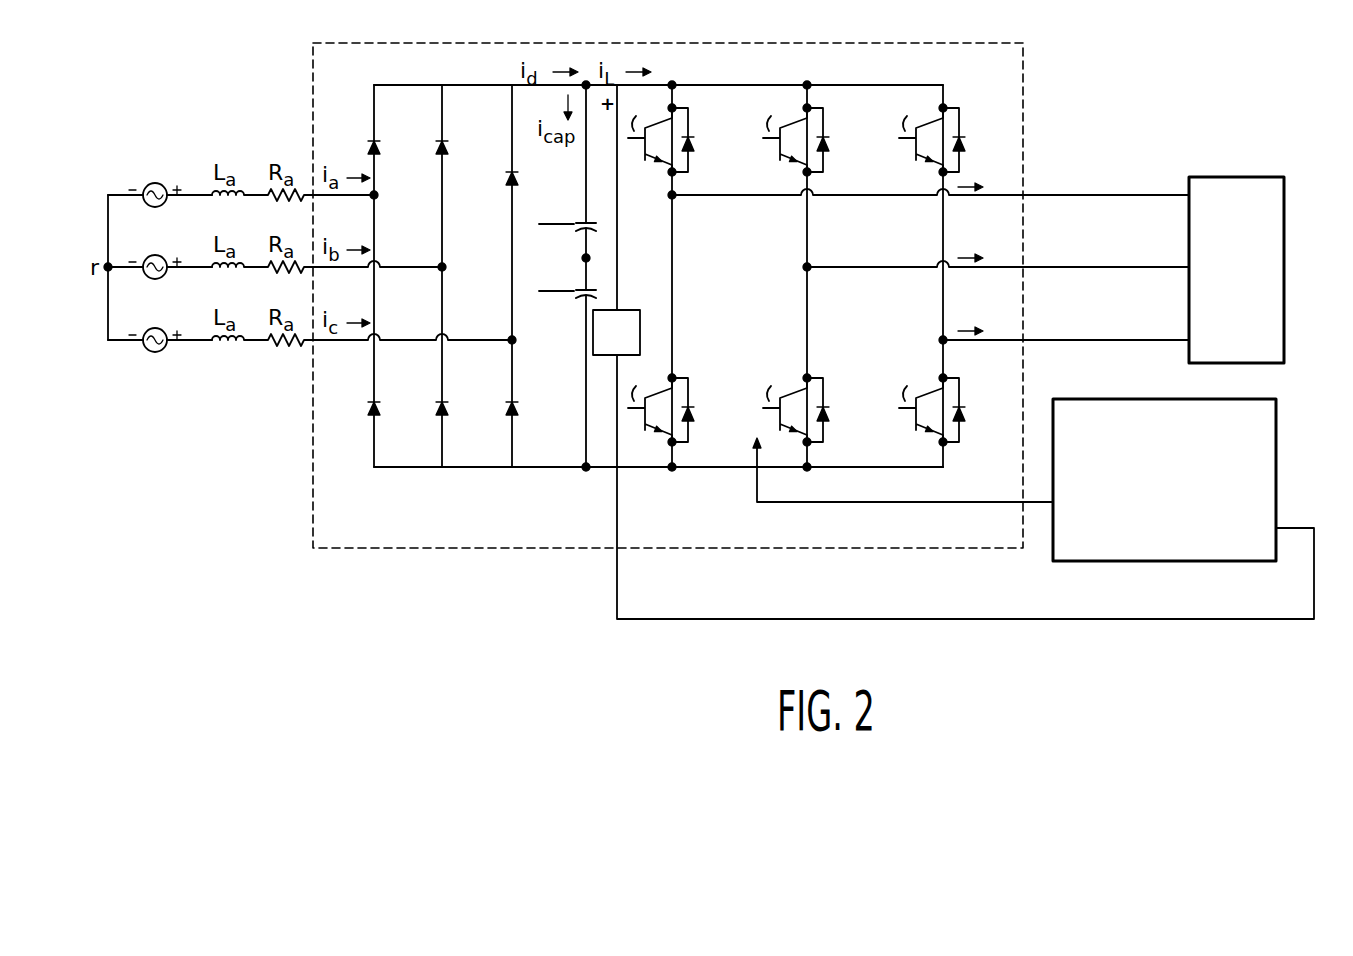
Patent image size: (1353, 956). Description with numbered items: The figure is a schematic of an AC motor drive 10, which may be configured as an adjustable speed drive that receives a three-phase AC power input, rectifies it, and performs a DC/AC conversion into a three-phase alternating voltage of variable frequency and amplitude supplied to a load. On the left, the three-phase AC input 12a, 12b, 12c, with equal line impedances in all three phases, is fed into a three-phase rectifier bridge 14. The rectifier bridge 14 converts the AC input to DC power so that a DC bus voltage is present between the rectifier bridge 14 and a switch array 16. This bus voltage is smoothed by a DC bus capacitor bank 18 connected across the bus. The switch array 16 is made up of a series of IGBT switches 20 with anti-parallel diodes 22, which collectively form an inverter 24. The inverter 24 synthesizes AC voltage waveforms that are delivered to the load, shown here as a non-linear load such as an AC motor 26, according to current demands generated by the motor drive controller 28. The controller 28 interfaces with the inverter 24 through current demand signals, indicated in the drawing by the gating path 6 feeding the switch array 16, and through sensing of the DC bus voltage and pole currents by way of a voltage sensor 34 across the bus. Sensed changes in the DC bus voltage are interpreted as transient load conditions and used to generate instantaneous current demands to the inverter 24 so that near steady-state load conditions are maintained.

The AC motor drive 10 is at (1023, 78).
The three-phase AC input (phase a) 12a is at (146, 185).
The three-phase AC input (phase b) 12b is at (165, 259).
The three-phase AC input (phase c) 12c is at (157, 353).
The three-phase rectifier bridge 14 is at (393, 485).
The switch array 16 is at (718, 476).
The DC bus capacitor bank 18 is at (645, 257).
The IGBT switches 20 is at (786, 269).
The anti-parallel diodes 22 is at (961, 136).
The inverter 24 is at (742, 323).
The AC motor 26 is at (1286, 197).
The motor drive controller 28 is at (1278, 416).
The voltage sensor 34 is at (640, 335).
The gating signals 6 is at (903, 470).